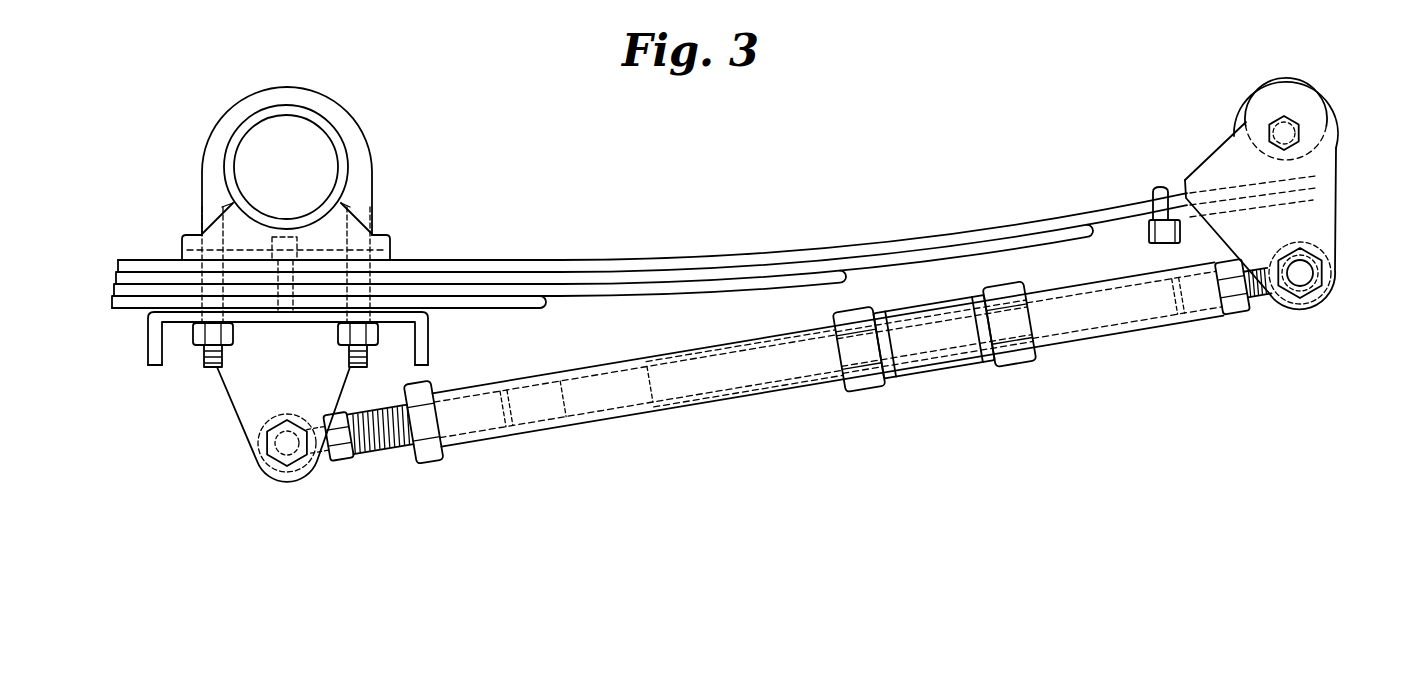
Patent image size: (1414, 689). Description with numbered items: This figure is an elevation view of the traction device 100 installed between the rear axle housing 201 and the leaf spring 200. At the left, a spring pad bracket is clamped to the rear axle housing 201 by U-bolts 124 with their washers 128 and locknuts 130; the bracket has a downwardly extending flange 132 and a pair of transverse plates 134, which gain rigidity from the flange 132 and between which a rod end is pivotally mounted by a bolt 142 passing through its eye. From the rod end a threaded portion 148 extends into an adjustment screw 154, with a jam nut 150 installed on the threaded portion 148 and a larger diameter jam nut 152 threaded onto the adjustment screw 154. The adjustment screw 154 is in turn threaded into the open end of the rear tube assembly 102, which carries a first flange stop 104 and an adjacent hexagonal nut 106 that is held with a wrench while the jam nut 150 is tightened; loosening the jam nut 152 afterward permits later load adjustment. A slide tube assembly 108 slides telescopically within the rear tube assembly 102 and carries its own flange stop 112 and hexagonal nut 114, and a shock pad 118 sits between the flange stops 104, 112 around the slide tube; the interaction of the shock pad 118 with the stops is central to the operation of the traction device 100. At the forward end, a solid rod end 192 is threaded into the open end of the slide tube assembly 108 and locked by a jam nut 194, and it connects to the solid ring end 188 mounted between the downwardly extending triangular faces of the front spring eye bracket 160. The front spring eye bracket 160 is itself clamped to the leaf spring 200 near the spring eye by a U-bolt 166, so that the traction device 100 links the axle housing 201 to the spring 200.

The traction device 100 is at (702, 538).
The rear tube assembly 102 is at (636, 434).
The first flange stop 104 is at (890, 380).
The hexagonal nut 106 is at (958, 383).
The slide tube assembly 108 is at (1086, 357).
The flange stop 112 is at (983, 380).
The hexagonal nut 114 is at (1030, 380).
The shock pad 118 is at (948, 380).
The U-bolts 124 is at (248, 95).
The washers 128 is at (184, 330).
The locknuts 130 is at (200, 336).
The downwardly extending flange 132 is at (148, 334).
The transverse plates 134 is at (230, 402).
The bolt 142 is at (268, 470).
The threaded portion 148 is at (330, 460).
The jam nut 150 is at (351, 470).
The larger diameter jam nut 152 is at (440, 462).
The adjustment screw 154 is at (385, 452).
The front spring eye bracket 160 is at (1390, 220).
The U-bolt 166 is at (1151, 190).
The solid ring end 188 is at (1272, 299).
The solid rod end 192 is at (1257, 303).
The jam nut 194 is at (1237, 312).
The leaf spring 200 is at (723, 240).
The rear axle housing 201 is at (340, 152).